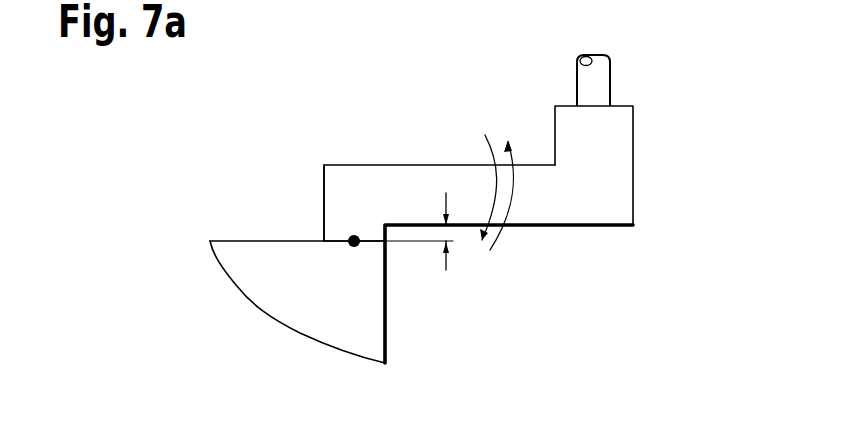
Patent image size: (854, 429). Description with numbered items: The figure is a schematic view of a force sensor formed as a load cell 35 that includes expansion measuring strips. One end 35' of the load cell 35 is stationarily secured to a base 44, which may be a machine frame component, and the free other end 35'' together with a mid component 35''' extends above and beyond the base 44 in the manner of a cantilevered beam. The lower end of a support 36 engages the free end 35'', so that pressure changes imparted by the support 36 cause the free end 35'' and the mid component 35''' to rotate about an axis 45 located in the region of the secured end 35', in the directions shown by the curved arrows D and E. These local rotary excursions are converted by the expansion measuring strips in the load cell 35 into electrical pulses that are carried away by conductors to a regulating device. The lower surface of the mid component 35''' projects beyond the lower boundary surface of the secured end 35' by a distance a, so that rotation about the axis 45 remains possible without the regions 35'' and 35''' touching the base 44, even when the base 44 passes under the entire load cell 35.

The load cell 35 is at (439, 152).
The end of load cell 35' is at (301, 177).
The free end of load cell 35'' is at (641, 165).
The mid component of load cell 35''' is at (509, 215).
The support 36 is at (595, 78).
The base 44 is at (370, 337).
The axis 45 is at (354, 241).
The curved arrow D is at (495, 195).
The curved arrow E is at (495, 195).
The distance a is at (446, 267).